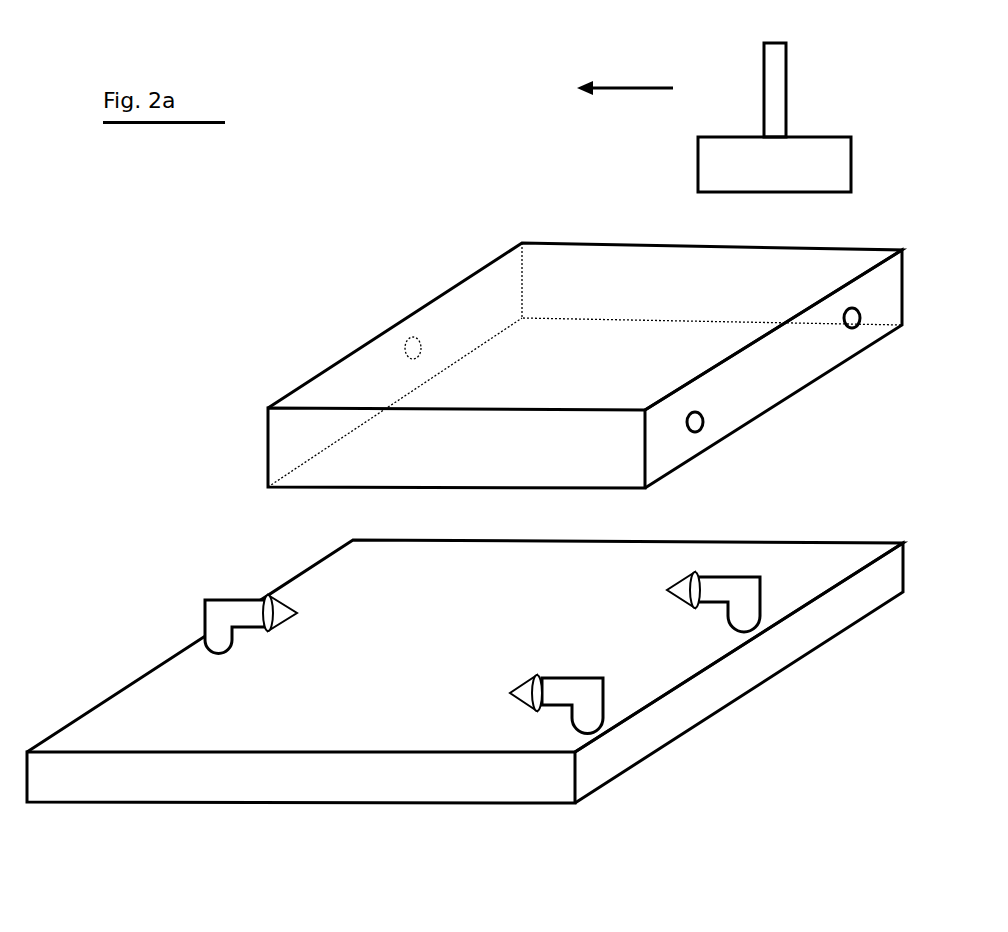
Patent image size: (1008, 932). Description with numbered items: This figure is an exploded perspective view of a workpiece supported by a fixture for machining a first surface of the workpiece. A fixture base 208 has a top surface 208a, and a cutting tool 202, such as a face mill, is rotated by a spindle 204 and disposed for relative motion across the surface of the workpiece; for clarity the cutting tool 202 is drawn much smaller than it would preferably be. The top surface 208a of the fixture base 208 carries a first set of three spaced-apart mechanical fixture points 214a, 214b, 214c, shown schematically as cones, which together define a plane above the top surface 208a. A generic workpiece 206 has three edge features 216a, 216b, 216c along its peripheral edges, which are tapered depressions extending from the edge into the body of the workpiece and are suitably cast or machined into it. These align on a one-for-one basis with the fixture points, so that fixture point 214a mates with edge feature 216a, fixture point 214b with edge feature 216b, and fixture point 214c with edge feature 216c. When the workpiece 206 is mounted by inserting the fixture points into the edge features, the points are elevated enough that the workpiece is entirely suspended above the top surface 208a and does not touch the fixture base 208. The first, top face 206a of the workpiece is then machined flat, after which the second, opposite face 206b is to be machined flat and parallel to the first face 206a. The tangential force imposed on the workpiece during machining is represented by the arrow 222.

The cutting tool 202 is at (698, 160).
The spindle 204 is at (786, 86).
The workpiece 206 is at (268, 428).
The first (top) face of the workpiece 206a is at (505, 282).
The second, opposite face of the workpiece 206b is at (310, 487).
The fixture base 208 is at (315, 777).
The top surface of the fixture base 208a is at (172, 704).
The mechanical fixture point 214a is at (587, 696).
The mechanical fixture point 214b is at (754, 598).
The mechanical fixture point 214c is at (220, 633).
The edge feature 216a is at (707, 421).
The edge feature 216b is at (862, 331).
The edge feature 216c is at (402, 343).
The arrow 222 is at (628, 88).